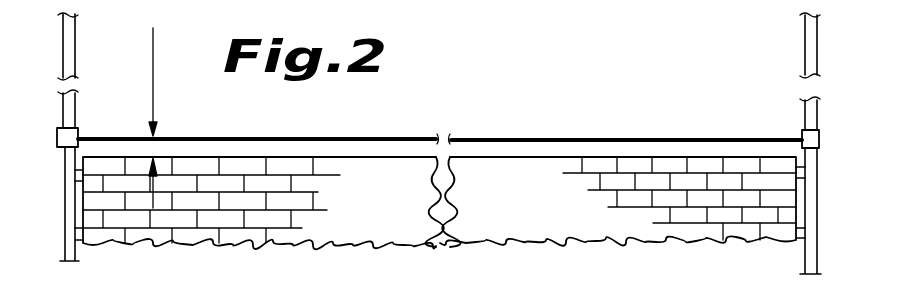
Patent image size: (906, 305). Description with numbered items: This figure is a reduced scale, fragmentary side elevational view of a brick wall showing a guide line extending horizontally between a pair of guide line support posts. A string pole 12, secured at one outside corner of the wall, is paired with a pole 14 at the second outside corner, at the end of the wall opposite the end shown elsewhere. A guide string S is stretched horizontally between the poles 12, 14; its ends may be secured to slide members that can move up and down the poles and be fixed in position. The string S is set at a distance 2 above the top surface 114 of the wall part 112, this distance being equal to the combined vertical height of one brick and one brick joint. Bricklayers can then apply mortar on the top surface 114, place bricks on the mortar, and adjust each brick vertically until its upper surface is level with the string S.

The distance 2 is at (155, 147).
The string pole 12 is at (805, 36).
The pole 14 is at (76, 44).
The guide string S is at (321, 137).
The wall part 112 is at (530, 183).
The top surface 114 is at (627, 157).